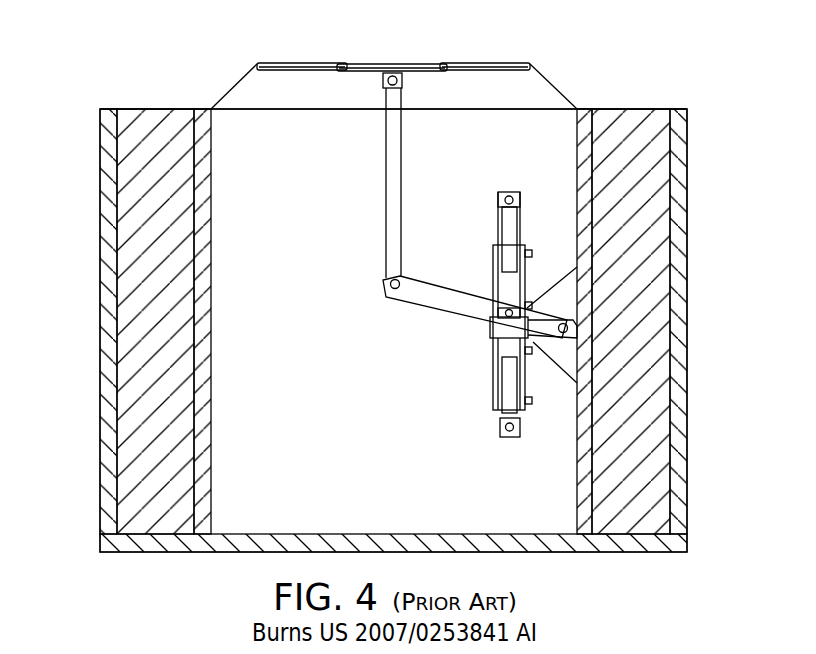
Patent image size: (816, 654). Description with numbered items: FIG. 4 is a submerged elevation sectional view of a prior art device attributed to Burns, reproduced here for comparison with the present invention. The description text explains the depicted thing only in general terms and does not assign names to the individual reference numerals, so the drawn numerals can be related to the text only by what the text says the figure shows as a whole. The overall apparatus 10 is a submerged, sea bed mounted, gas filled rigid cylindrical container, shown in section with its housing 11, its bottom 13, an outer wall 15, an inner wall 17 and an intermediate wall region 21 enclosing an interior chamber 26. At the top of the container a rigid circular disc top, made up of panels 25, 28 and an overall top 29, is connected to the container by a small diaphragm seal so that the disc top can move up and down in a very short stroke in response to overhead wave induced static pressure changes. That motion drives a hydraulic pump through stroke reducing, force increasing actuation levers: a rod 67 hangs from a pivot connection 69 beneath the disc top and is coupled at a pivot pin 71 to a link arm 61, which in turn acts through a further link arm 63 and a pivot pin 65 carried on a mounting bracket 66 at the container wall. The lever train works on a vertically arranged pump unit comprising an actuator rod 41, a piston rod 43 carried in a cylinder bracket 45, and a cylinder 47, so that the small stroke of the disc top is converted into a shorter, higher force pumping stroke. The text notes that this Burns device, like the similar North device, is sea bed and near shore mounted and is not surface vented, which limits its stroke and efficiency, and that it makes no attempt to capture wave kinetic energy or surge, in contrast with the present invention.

The cooking apparatus 10 is at (195, 77).
The housing 11 is at (99, 178).
The bottom wall 13 is at (573, 545).
The outer wall 15 is at (677, 457).
The inner wall 17 is at (585, 501).
The insulation 21 is at (632, 402).
The lid panel 25 is at (291, 63).
The cooking chamber 26 is at (260, 159).
The lid panel 28 is at (450, 63).
The lid 29 is at (552, 86).
The actuator rod 41 is at (528, 256).
The piston rod 43 is at (518, 278).
The cylinder bracket 45 is at (522, 293).
The cylinder 47 is at (520, 387).
The link arm 61 is at (414, 302).
The link arm 63 is at (472, 317).
The pivot pin 65 is at (568, 328).
The mounting bracket 66 is at (570, 355).
The lift rod 67 is at (386, 246).
The pivot connection 69 is at (390, 76).
The pivot pin 71 is at (390, 294).